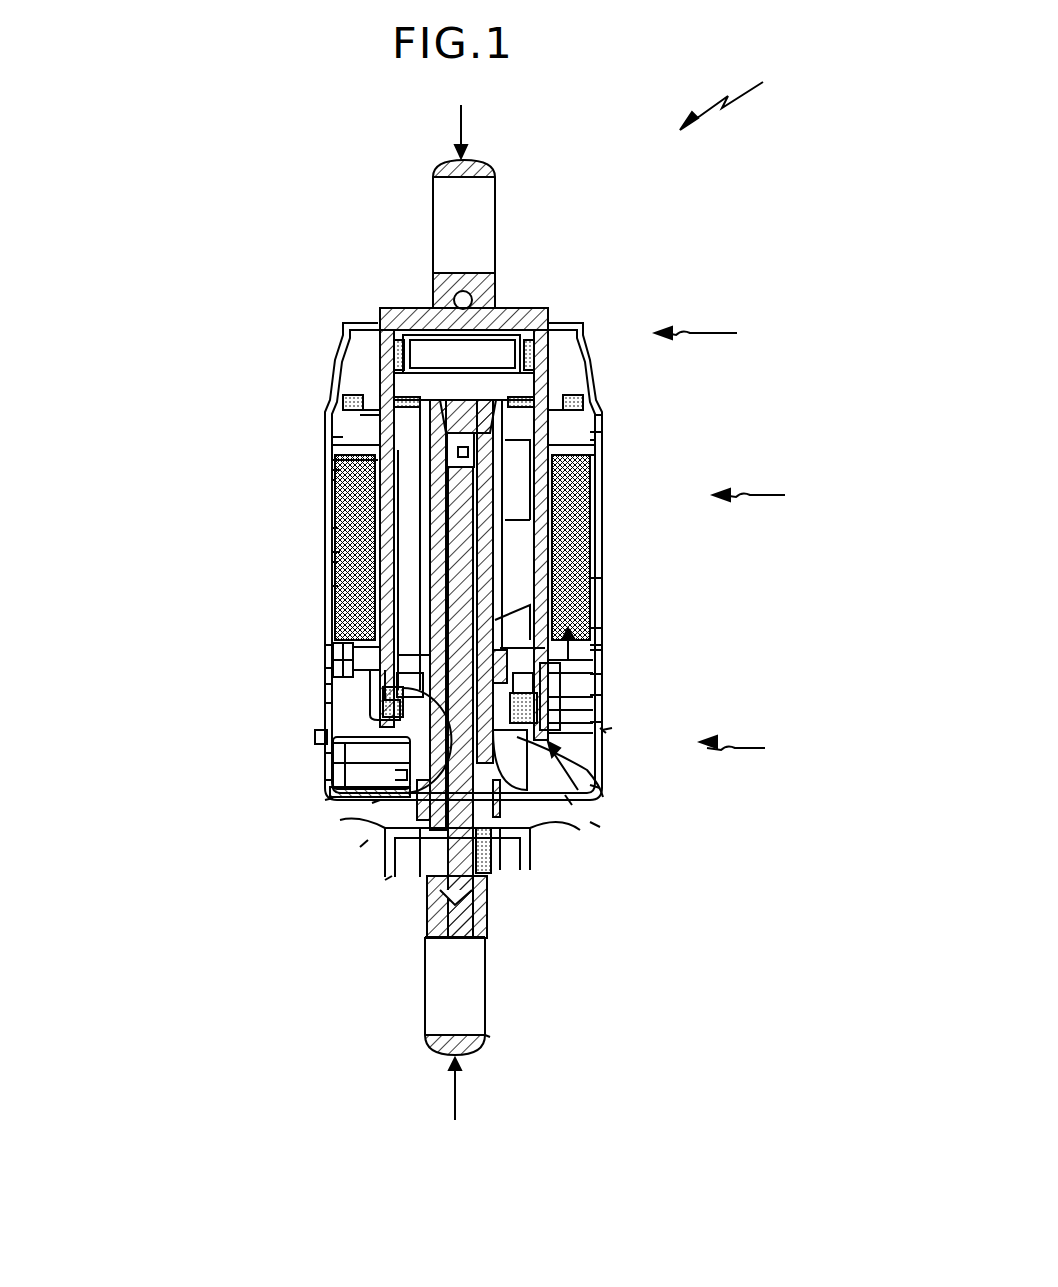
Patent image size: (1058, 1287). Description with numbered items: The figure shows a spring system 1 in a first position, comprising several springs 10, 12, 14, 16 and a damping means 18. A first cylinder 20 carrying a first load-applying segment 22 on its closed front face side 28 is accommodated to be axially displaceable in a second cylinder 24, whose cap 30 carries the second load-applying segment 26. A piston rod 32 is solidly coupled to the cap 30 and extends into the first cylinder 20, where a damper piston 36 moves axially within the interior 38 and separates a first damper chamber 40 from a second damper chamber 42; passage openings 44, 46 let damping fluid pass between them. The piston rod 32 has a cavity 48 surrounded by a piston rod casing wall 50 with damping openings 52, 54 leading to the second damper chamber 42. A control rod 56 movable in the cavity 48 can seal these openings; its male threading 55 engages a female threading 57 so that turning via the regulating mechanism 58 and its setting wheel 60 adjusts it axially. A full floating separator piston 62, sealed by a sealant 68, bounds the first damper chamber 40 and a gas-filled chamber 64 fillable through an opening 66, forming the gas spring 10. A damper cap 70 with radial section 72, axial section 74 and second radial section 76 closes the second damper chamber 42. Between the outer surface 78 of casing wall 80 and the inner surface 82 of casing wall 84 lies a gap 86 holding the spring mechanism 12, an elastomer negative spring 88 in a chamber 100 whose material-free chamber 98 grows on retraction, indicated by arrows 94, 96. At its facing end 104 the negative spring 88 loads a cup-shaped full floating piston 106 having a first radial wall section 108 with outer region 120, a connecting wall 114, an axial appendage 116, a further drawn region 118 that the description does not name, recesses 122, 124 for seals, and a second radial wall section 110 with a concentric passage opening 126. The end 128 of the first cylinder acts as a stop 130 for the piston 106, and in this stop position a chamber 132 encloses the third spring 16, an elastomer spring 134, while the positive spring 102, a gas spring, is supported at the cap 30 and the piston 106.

The spring system 1 is at (735, 95).
The spring mechanism 10 is at (716, 337).
The spring mechanism 12 is at (773, 497).
The spring mechanism 14 is at (759, 747).
The spring 16 is at (572, 805).
The damping means 18 is at (602, 630).
The first cylinder 20 is at (602, 577).
The first load-applying segment 22 is at (497, 168).
The second cylinder 24 is at (325, 703).
The second load-applying segment 26 is at (490, 1037).
The closed front face side 28 is at (527, 306).
The cap 30 is at (327, 790).
The piston rod 32 is at (513, 480).
The damper piston 36 is at (602, 388).
The interior 38 is at (330, 505).
The first damper chamber 40 is at (480, 398).
The second damper chamber 42 is at (420, 563).
The passage opening 44 is at (332, 403).
The passage opening 46 is at (602, 413).
The cavity 48 is at (332, 436).
The piston rod casing wall 50 is at (420, 588).
The damping opening 52 is at (602, 436).
The damping opening 54 is at (332, 462).
The male threading 55 is at (515, 513).
The control rod 56 is at (497, 915).
The female threading 57 is at (409, 570).
The regulating mechanism 58 is at (388, 876).
The setting wheel 60 is at (360, 847).
The full floating separator piston 62 is at (583, 350).
The gas-filled chamber 64 is at (456, 363).
The opening 66 is at (452, 294).
The sealant 68 is at (396, 347).
The damper cap 70 is at (325, 643).
The radially-extending section 72 is at (325, 668).
The axially-extending section 74 is at (325, 753).
The second radial section 76 is at (325, 780).
The outer surface 78 is at (332, 552).
The casing wall 80 is at (332, 564).
The inner surface 82 is at (332, 586).
The casing wall 84 is at (332, 479).
The gap 86 is at (332, 420).
The elastomer negative spring 88 is at (332, 528).
The arrow 94 is at (454, 1095).
The arrow 96 is at (458, 122).
The material-free chamber 98 is at (602, 432).
The chamber 100 is at (602, 456).
The positive spring 102 is at (600, 827).
The facing end 104 is at (602, 645).
The full floating piston 106 is at (602, 610).
The first radial wall section 108 is at (602, 652).
The second radial wall section 110 is at (600, 788).
The connecting wall 114 is at (602, 722).
The axial appendage 116 is at (430, 642).
The spring 118 is at (541, 725).
The radially outward situated region 120 is at (325, 684).
The recess 122 is at (530, 650).
The recess 124 is at (602, 674).
The concentric passage opening 126 is at (487, 892).
The end 128 is at (612, 728).
The stop 130 is at (604, 730).
The chamber 132 is at (312, 738).
The elastomer spring 134 is at (372, 803).